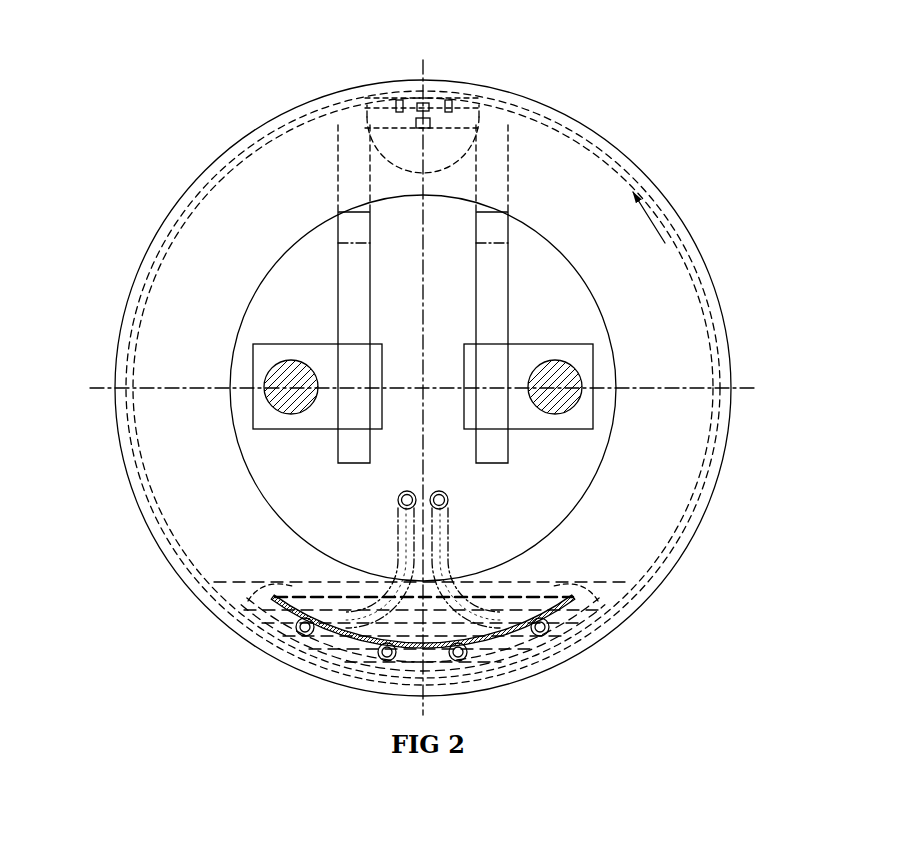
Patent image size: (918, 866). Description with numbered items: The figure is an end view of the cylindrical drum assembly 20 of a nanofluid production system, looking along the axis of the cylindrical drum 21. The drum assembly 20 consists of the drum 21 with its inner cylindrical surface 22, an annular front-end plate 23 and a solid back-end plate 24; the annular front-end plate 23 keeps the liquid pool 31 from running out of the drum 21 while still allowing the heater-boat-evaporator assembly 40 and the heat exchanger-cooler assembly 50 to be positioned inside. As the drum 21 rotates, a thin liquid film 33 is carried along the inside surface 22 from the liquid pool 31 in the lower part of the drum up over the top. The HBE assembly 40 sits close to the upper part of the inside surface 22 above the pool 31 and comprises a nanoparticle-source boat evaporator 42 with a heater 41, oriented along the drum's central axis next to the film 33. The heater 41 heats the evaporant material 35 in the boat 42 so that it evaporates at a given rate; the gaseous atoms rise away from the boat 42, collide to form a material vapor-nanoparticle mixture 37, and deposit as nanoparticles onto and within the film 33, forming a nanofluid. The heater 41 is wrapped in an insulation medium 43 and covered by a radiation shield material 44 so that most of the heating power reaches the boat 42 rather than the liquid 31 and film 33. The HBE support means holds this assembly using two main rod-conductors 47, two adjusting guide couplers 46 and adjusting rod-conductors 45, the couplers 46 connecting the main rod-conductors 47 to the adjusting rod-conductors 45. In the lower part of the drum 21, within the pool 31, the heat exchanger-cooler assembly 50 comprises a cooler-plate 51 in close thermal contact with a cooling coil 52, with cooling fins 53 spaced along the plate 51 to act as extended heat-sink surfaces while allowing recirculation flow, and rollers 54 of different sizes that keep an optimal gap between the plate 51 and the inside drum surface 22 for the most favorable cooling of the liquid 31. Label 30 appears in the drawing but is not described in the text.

The cylindrical drum assembly 20 is at (147, 57).
The cylindrical drum 21 is at (697, 487).
The inner cylindrical surface 22 is at (657, 548).
The annular front-end plate 23 is at (556, 540).
The back-end plate 24 is at (493, 496).
The shell assembly 30 is at (813, 85).
The liquid pool 31 is at (611, 588).
The liquid film 33 is at (665, 243).
The evaporant material 35 is at (433, 118).
The material vapor-nanoparticle mixture 37 is at (429, 96).
The heater-boat-evaporator (HBE) assembly 40 is at (34, 97).
The heater 41 is at (412, 108).
The boat evaporator 42 is at (412, 122).
The insulation medium 43 is at (392, 143).
The radiation shield material 44 is at (388, 166).
The adjusting rod-conductors 45 is at (350, 289).
The adjusting guide couplers 46 is at (268, 355).
The main rod-conductors 47 is at (284, 392).
The heat exchanger-cooler assembly 50 is at (34, 460).
The cooler-plate 51 is at (372, 644).
The cooling tubing (coil) 52 is at (345, 594).
The cooling fins 53 is at (363, 590).
The rollers 54 is at (268, 592).